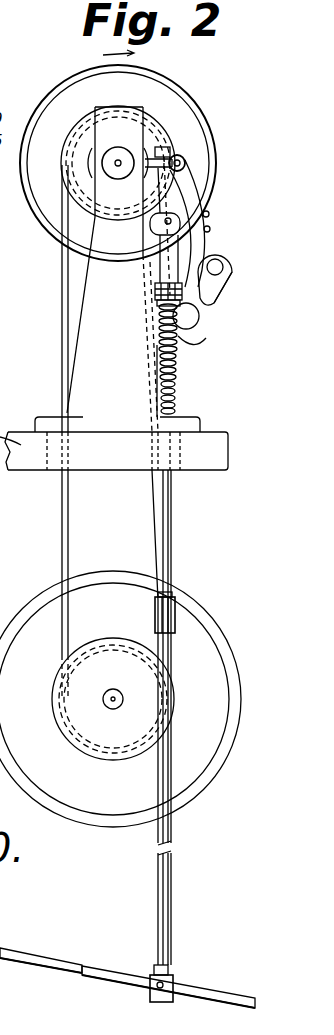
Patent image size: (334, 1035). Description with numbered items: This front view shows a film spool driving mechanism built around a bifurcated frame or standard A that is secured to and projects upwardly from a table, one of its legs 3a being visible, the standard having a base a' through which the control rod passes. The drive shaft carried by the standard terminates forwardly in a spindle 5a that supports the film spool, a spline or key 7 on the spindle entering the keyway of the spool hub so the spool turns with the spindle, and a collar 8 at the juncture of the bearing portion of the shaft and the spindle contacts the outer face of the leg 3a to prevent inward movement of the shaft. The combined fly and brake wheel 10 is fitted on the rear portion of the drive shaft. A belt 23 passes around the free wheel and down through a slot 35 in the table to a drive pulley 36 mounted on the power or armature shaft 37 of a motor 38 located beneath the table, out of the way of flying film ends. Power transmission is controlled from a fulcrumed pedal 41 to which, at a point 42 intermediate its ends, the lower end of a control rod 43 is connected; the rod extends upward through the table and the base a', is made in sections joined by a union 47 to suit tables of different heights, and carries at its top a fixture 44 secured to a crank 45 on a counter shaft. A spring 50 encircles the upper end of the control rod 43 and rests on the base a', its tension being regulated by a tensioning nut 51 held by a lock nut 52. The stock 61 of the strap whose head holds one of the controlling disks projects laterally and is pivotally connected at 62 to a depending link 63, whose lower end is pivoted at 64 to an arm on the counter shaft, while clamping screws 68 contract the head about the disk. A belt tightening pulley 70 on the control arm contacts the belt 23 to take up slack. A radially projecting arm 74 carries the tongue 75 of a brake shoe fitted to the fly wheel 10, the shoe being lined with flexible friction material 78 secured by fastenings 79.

The combined fly and brake wheel 10 is at (200, 126).
The bifurcated frame or standard A is at (124, 107).
The leg 3a is at (94, 315).
The collar 8 is at (112, 151).
The spline or key 7 is at (121, 151).
The spindle 5a is at (118, 172).
The stock 61 is at (160, 150).
The clamping screws 68 is at (177, 157).
The pivotal connection 62 is at (187, 168).
The depending link 63 is at (195, 180).
The flexible friction material 78 is at (207, 216).
The fastenings 79 is at (208, 231).
The tongue 75 is at (217, 251).
The radially projecting arm 74 is at (218, 300).
The pivotal connection 64 is at (199, 323).
The belt tightening pulley 70 is at (201, 340).
The crank 45 is at (155, 224).
The fixture 44 is at (165, 259).
The lock nut 52 is at (155, 286).
The tensioning nut 51 is at (155, 296).
The spring 50 is at (178, 367).
The slot 35 is at (46, 456).
The base a' is at (56, 413).
The belt 23 is at (63, 549).
The control rod 43 is at (176, 380).
The union 47 is at (176, 606).
The motor 38 is at (120, 699).
The drive pulley 36 is at (104, 644).
The power or armature shaft 37 is at (113, 691).
The fulcrumed pedal 41 is at (104, 976).
The connection point 42 is at (174, 986).